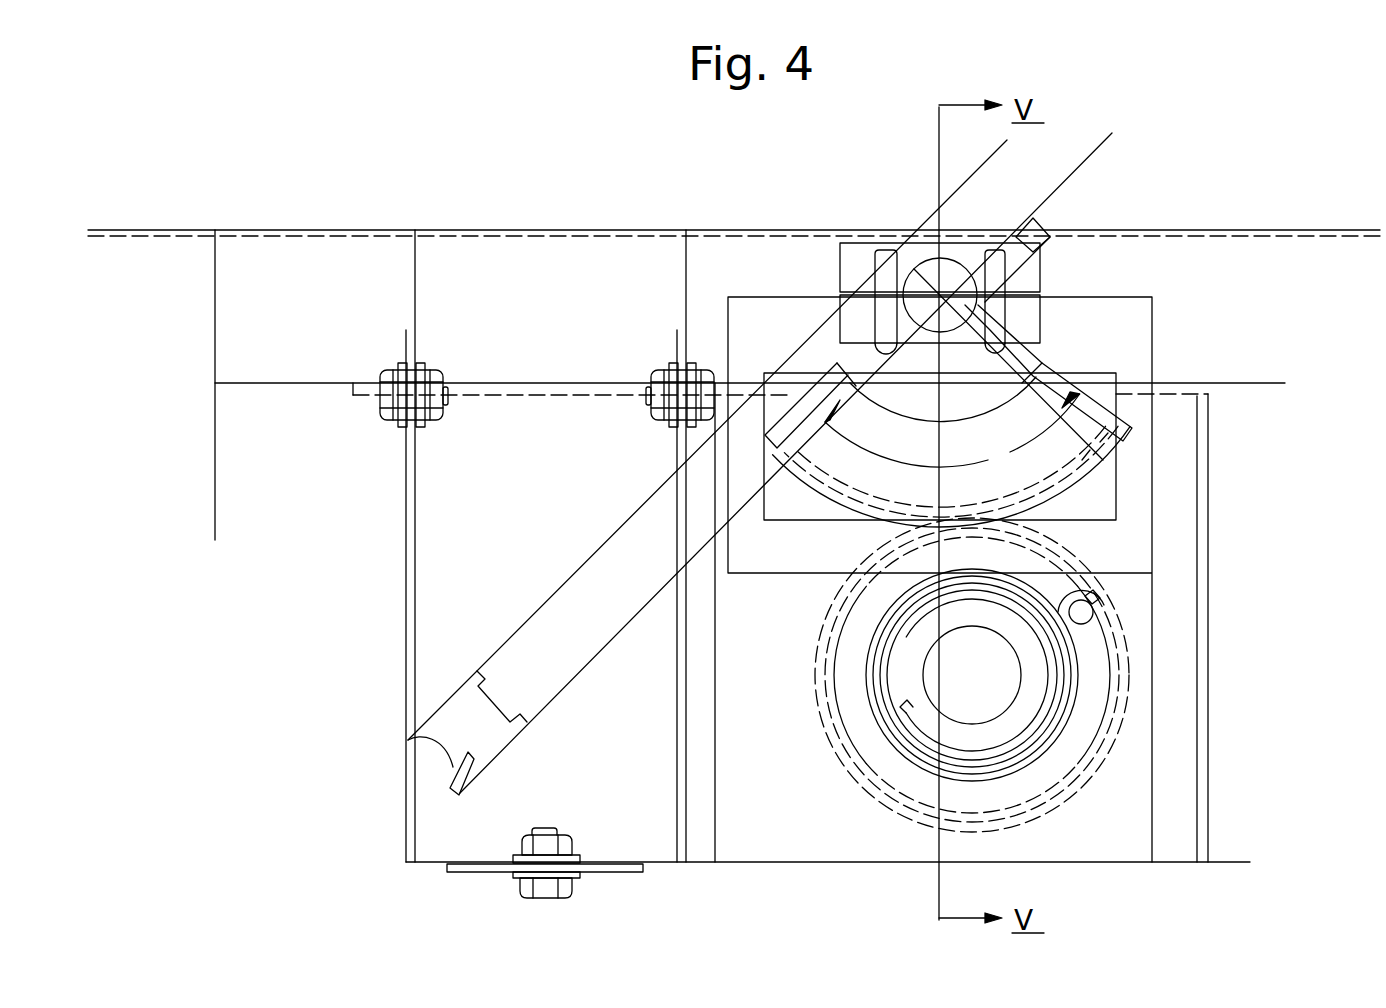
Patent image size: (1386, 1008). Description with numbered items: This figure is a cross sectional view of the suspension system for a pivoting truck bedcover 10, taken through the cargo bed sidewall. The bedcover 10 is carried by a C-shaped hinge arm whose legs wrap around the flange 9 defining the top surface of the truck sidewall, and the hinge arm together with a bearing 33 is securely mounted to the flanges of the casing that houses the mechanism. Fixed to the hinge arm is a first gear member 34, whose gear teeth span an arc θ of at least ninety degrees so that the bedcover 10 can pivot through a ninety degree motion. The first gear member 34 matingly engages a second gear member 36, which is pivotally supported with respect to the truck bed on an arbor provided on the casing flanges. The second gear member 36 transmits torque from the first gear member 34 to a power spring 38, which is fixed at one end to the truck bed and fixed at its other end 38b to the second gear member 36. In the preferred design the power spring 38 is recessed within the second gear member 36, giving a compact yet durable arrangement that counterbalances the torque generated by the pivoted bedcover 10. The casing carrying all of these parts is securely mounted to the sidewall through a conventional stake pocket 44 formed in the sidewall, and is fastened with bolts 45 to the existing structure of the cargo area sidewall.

The flange 9 is at (1228, 228).
The bedcover 10 is at (592, 573).
The bearing 33 is at (1032, 278).
The first gear member 34 is at (1100, 465).
The second gear member 36 is at (1117, 640).
The power spring 38 is at (1034, 675).
The other end of power spring 38b is at (1102, 598).
The stake pocket 44 is at (405, 528).
The bolt 45 is at (396, 372).